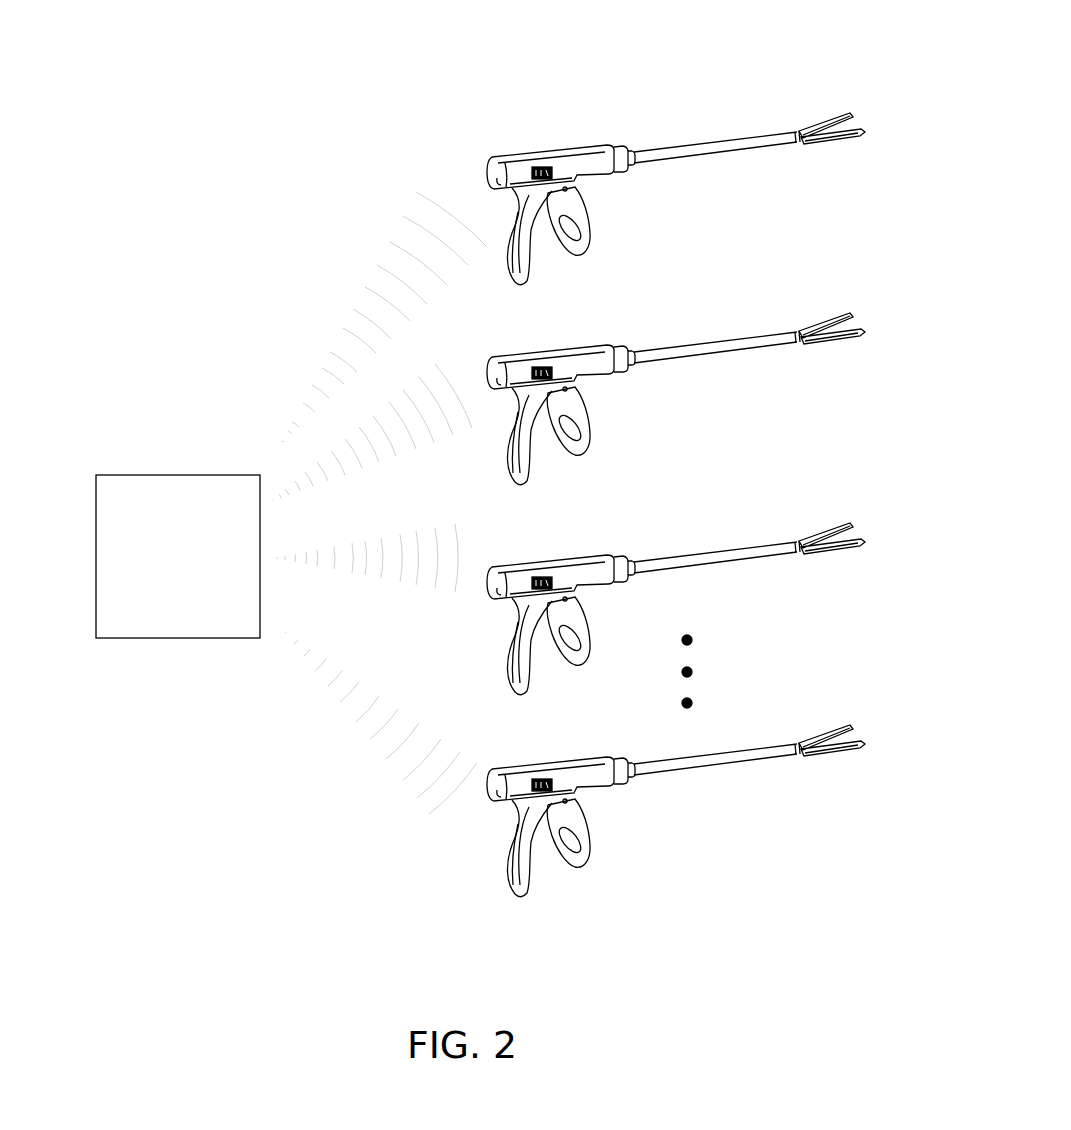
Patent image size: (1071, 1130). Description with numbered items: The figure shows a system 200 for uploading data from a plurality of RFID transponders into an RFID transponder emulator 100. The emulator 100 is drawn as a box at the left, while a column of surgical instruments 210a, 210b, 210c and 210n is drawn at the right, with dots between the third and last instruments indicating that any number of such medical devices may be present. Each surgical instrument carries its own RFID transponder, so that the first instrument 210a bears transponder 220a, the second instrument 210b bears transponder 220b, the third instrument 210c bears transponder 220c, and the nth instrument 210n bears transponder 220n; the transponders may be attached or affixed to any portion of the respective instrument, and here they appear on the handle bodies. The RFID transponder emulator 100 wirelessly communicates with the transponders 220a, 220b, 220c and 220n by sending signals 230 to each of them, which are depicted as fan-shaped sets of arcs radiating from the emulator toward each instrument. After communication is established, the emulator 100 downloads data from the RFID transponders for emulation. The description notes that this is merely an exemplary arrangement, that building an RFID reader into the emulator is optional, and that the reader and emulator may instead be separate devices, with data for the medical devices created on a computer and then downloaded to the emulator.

The RFID transponder emulator 100 is at (203, 419).
The system 200 is at (594, 57).
The surgical instrument 210a is at (788, 97).
The surgical instrument 210b is at (692, 369).
The surgical instrument 210c is at (692, 579).
The surgical instrument 210n is at (691, 781).
The RFID transponder 220a is at (548, 163).
The RFID transponder 220b is at (574, 342).
The RFID transponder 220c is at (574, 552).
The RFID transponder 220n is at (573, 753).
The signals 230 is at (361, 282).